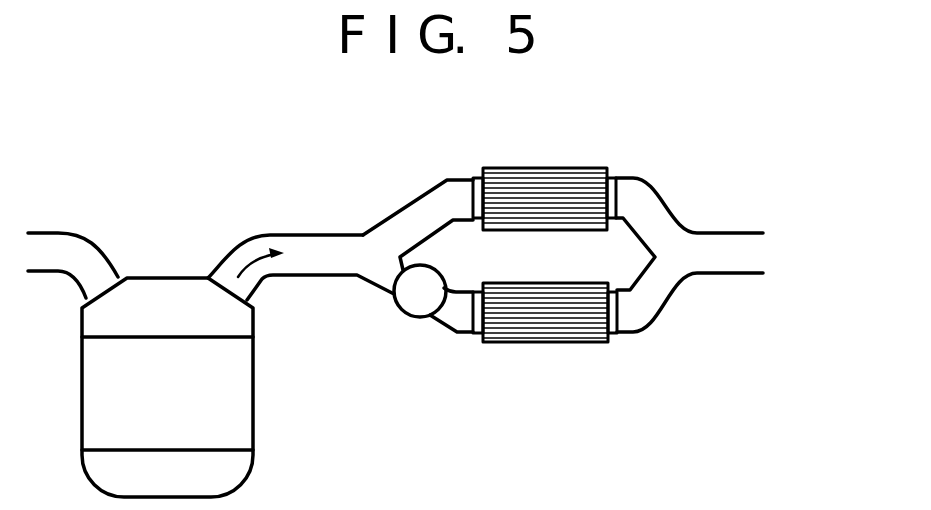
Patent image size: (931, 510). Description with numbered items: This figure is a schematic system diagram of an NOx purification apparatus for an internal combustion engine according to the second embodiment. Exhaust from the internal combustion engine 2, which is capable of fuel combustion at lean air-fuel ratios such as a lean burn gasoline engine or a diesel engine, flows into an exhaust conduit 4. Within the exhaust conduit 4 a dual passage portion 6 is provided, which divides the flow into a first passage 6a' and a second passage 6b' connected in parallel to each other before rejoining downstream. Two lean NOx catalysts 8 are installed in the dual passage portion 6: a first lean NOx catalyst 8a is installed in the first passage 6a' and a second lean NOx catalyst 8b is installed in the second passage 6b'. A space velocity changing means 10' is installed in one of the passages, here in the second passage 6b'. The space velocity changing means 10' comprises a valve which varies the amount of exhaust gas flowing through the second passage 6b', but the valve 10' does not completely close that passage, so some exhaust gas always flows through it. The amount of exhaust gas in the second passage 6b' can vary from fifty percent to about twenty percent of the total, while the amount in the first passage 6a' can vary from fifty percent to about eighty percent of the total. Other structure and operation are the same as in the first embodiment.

The internal combustion engine 2 is at (253, 407).
The exhaust conduit 4 is at (335, 243).
The dual passage portion 6 is at (415, 198).
The first passage 6a' is at (438, 191).
The second passage 6b' is at (435, 336).
The lean NOx catalysts 8 is at (535, 220).
The first lean NOx catalyst 8a is at (530, 185).
The second lean NOx catalyst 8b is at (520, 323).
The space velocity changing means 10' is at (391, 344).